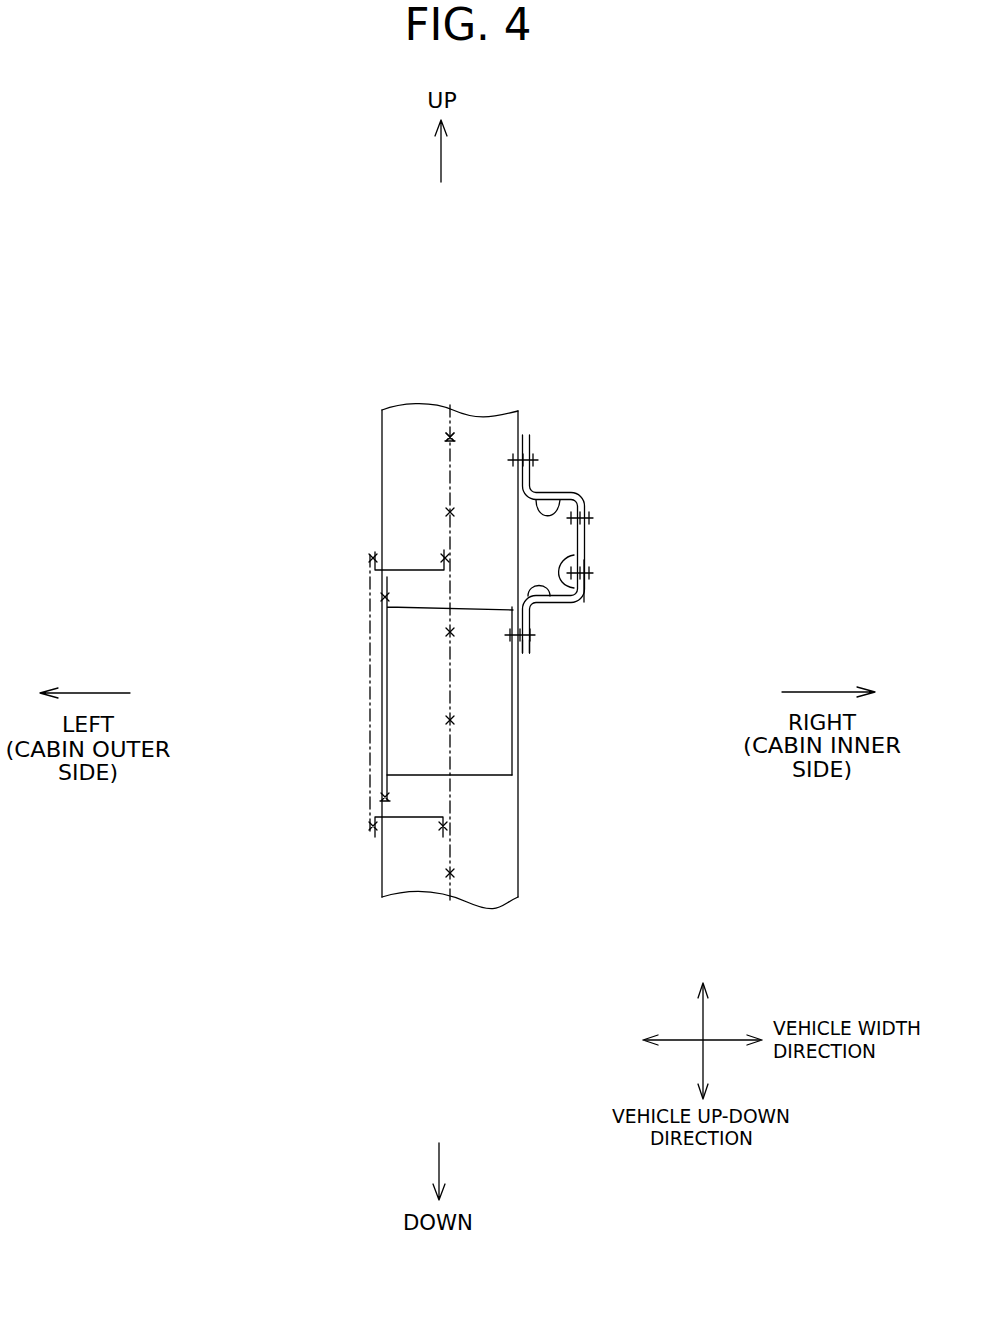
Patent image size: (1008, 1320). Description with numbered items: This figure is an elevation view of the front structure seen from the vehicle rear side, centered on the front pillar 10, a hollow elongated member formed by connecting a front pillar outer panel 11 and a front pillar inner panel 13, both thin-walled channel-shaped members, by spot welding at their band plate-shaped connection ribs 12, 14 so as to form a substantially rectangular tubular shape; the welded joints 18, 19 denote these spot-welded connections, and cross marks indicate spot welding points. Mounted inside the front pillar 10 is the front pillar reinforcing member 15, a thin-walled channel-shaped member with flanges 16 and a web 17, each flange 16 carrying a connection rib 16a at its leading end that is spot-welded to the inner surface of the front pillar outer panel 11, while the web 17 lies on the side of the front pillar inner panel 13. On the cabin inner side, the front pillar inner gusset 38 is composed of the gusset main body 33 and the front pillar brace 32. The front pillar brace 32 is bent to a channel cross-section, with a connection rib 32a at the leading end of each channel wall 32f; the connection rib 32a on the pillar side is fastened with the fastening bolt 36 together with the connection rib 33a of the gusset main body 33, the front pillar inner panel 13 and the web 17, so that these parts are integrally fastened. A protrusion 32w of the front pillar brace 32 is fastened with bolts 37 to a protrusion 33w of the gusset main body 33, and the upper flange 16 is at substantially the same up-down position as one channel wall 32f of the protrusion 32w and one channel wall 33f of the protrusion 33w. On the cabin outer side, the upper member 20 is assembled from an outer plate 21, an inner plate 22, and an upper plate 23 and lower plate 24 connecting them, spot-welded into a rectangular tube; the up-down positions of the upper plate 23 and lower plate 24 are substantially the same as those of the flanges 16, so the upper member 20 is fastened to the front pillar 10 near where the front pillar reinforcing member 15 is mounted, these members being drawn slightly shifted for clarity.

The front pillar 10 is at (352, 436).
The front pillar outer panel 11 is at (393, 410).
The connection rib 12 is at (450, 432).
The front pillar inner panel 13 is at (500, 410).
The connection rib 14 is at (452, 428).
The front pillar reinforcing member 15 is at (413, 815).
The flange 16 is at (466, 776).
The connection rib 16a is at (388, 597).
The web 17 is at (512, 745).
The welded joint 18 is at (448, 437).
The welded joint 19 is at (448, 437).
The upper member 20 is at (370, 720).
The outer plate 21 is at (360, 657).
The inner plate 22 is at (450, 693).
The upper plate 23 is at (420, 568).
The lower plate 24 is at (423, 780).
The front pillar brace 32 is at (592, 478).
The protrusion 32w is at (587, 538).
The channel wall 32f is at (579, 607).
The connection rib 32a is at (531, 650).
The gusset main body 33 is at (561, 492).
The protrusion 33w is at (586, 585).
The channel wall 33f is at (538, 602).
The connection rib 33a is at (527, 652).
The fastening bolt 36 is at (536, 628).
The bolt 37 is at (590, 566).
The front pillar inner gusset 38 is at (760, 345).